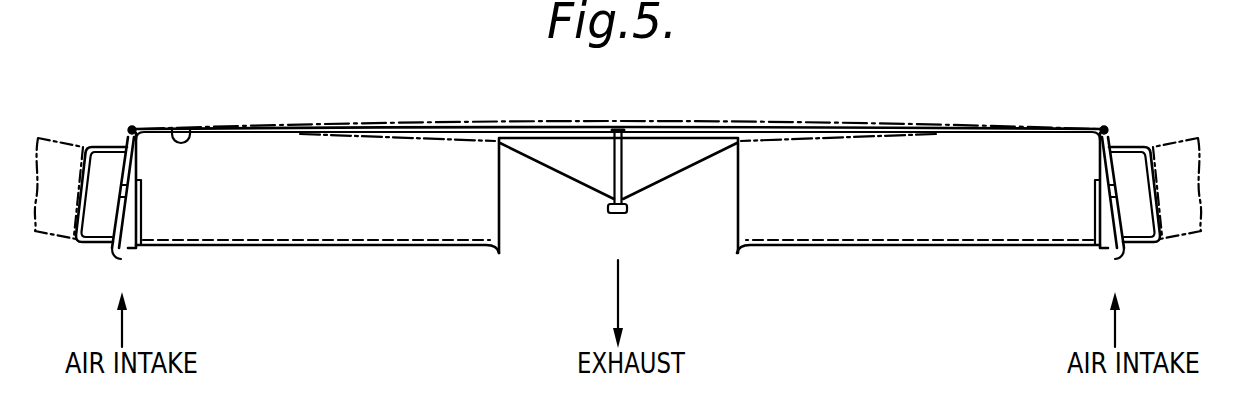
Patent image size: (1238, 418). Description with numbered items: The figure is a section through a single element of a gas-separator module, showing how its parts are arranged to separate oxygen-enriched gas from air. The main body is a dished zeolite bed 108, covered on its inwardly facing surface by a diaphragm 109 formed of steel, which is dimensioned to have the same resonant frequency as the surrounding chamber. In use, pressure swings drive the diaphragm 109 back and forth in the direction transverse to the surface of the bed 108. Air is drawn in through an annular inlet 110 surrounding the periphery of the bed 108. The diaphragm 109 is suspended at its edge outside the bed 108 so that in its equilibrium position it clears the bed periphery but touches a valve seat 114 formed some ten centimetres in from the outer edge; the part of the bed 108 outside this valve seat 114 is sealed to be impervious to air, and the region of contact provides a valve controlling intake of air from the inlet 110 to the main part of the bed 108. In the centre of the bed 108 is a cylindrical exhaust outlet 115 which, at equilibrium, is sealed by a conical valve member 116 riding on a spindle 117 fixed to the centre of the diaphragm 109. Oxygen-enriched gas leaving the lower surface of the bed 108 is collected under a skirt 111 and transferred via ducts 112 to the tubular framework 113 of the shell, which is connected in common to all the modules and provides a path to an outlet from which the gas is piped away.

The dished zeolite bed 108 is at (365, 201).
The diaphragm 109 is at (472, 127).
The annular inlet 110 is at (115, 257).
The skirt 111 is at (256, 246).
The ducts 112 is at (117, 187).
The tubular framework 113 is at (97, 163).
The valve seat 114 is at (191, 132).
The cylindrical exhaust outlet 115 is at (535, 223).
The conical valve member 116 is at (580, 175).
The spindle 117 is at (623, 212).